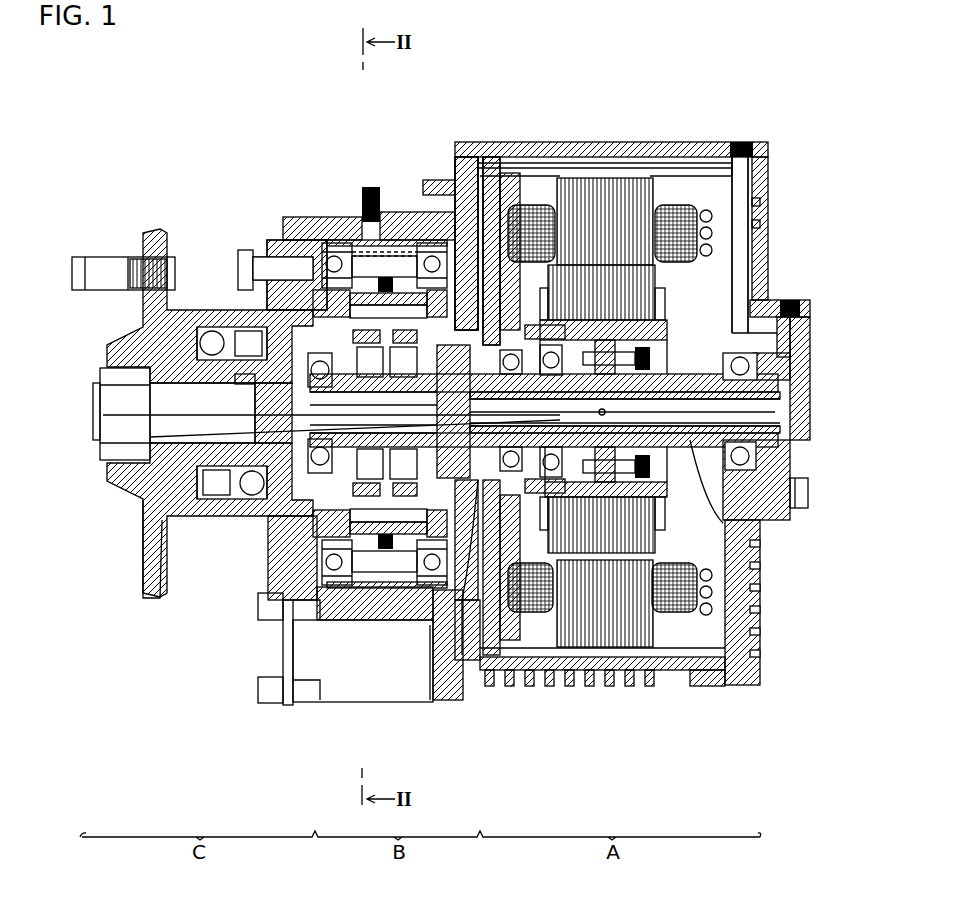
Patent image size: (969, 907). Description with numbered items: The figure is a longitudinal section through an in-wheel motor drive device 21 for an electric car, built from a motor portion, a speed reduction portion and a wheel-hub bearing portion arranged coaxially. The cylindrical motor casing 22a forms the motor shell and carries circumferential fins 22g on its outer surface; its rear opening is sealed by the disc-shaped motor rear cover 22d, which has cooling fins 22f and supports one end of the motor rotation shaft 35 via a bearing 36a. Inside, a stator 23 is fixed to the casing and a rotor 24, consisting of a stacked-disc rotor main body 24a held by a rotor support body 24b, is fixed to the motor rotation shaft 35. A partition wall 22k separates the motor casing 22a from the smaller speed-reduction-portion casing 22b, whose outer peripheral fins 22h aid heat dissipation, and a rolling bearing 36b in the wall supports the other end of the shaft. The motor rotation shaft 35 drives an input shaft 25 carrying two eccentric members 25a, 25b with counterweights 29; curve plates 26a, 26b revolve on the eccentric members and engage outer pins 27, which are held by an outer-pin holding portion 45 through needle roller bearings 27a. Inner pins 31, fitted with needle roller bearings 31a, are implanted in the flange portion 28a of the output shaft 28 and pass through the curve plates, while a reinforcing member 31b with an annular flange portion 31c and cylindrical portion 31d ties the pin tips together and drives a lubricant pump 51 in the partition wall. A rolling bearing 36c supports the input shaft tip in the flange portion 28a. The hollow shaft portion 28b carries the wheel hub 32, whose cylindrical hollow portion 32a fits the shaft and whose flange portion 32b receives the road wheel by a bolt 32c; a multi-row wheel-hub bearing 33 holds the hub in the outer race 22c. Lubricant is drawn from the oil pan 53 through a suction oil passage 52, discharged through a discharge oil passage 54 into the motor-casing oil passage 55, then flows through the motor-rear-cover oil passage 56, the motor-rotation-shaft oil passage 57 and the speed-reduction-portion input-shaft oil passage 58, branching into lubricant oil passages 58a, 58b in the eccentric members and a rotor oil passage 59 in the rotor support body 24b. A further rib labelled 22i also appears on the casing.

The in-wheel motor drive device 21 is at (761, 131).
The motor casing 22a is at (705, 684).
The speed-reduction-portion casing 22b is at (413, 215).
The outer race 22c is at (268, 571).
The motor rear cover 22d is at (762, 592).
The fins 22f is at (762, 231).
The circumferential fins 22g is at (607, 682).
The outer peripheral fins 22h is at (300, 225).
The housing rib 22i is at (762, 208).
The partition wall 22k is at (448, 640).
The stator 23 is at (643, 627).
The rotor 24 is at (640, 548).
The rotor main body 24a is at (605, 292).
The rotor support body 24b is at (662, 300).
The input shaft 25 is at (518, 520).
The eccentric member 25a is at (462, 640).
The eccentric member 25b is at (248, 383).
The curve plate 26a is at (410, 480).
The curve plate 26b is at (368, 480).
The outer pins 27 is at (392, 529).
The needle roller bearing 27a is at (332, 300).
The output shaft 28 is at (242, 250).
The flange portion 28a is at (290, 262).
The shaft portion 28b is at (100, 390).
The counterweights 29 is at (340, 580).
The inner pins 31 is at (375, 520).
The needle roller bearing 31a is at (368, 243).
The reinforcing member 31b is at (515, 108).
The flange portion 31c is at (460, 235).
The cylindrical portion 31d is at (488, 200).
The wheel hub 32 is at (107, 342).
The cylindrical hollow portion 32a is at (238, 486).
The flange portion 32b is at (150, 600).
The bolt 32c is at (88, 262).
The wheel-hub bearing 33 is at (212, 340).
The motor rotation shaft 35 is at (762, 541).
The bearing 36a is at (775, 455).
The rolling bearing 36b is at (552, 505).
The rolling bearing 36c is at (335, 586).
The outer-pin holding portion 45 is at (366, 200).
The lubricant pump 51 is at (478, 560).
The suction oil passage 52 is at (430, 500).
The oil pan 53 is at (290, 637).
The discharge oil passage 54 is at (508, 250).
The motor-casing oil passage 55 is at (566, 165).
The motor-rear-cover oil passage 56 is at (740, 190).
The motor-rotation-shaft oil passage 57 is at (760, 399).
The speed-reduction-portion input-shaft oil passage 58 is at (700, 423).
The lubricant oil passage 58a is at (103, 415).
The lubricant oil passage 58b is at (150, 437).
The rotor oil passage 59 is at (667, 332).